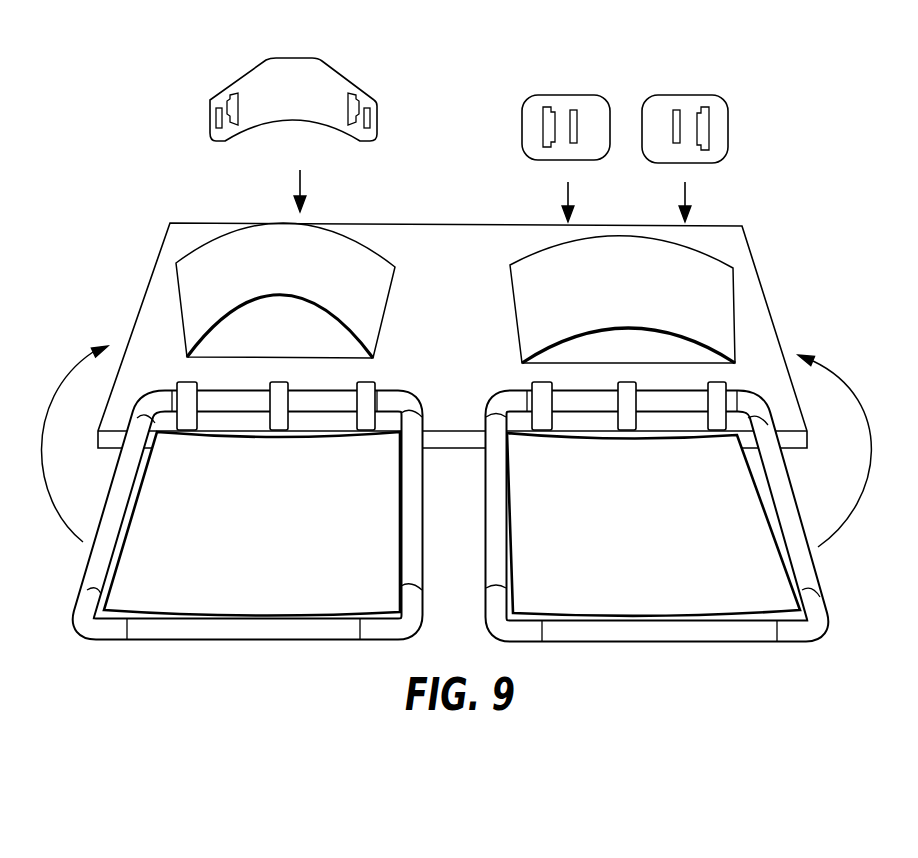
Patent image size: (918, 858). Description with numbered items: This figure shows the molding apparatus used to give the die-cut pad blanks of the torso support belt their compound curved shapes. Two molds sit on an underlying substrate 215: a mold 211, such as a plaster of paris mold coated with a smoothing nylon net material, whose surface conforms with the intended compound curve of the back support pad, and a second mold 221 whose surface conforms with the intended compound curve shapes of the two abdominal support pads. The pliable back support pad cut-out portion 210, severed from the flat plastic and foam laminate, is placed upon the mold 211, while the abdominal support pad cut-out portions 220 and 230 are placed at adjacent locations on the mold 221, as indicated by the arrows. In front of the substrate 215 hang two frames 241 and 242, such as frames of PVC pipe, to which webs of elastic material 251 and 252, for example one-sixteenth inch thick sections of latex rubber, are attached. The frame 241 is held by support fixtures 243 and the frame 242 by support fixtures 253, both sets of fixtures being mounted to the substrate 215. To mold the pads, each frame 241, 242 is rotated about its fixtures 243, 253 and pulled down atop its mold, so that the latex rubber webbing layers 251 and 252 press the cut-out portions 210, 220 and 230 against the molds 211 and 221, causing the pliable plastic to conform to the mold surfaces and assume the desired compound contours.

The back support pad cut-out portion 210 is at (333, 80).
The mold 211 is at (365, 268).
The underlying substrate 215 is at (755, 280).
The abdominal support pad cut-out portion 220 is at (568, 93).
The mold 221 is at (532, 322).
The abdominal support pad cut-out portion 230 is at (683, 95).
The frame 241 is at (90, 572).
The frame 242 is at (812, 573).
The support fixtures 243 is at (280, 385).
The web of elastic material 251 is at (387, 540).
The web of elastic material 252 is at (755, 508).
The support fixtures 253 is at (540, 388).